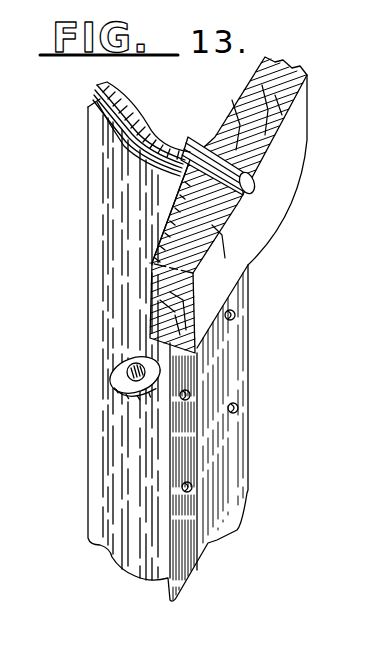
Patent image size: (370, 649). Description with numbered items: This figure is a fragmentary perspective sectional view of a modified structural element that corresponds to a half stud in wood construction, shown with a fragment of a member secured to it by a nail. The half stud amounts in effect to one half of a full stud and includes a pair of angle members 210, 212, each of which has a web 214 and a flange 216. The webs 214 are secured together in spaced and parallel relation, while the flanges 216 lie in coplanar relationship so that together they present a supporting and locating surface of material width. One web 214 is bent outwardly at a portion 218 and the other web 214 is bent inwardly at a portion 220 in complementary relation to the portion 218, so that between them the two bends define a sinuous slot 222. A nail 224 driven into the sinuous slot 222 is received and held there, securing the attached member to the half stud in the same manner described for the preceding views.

The angle member 210 is at (181, 125).
The angle member 212 is at (183, 163).
The web 214 is at (78, 128).
The flange 216 is at (240, 93).
The outwardly bent portion 218 is at (145, 130).
The inwardly bent portion 220 is at (120, 150).
The sinuous slot 222 is at (153, 138).
The nail 224 is at (252, 190).